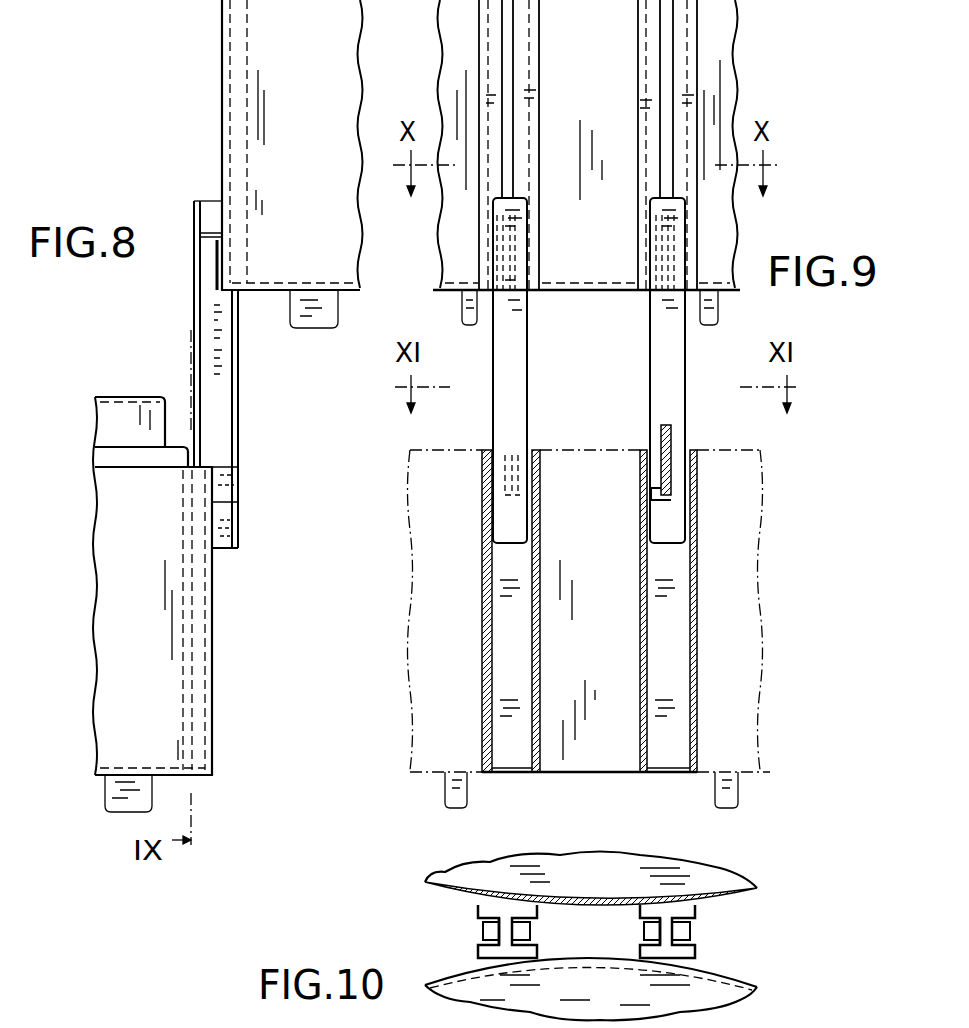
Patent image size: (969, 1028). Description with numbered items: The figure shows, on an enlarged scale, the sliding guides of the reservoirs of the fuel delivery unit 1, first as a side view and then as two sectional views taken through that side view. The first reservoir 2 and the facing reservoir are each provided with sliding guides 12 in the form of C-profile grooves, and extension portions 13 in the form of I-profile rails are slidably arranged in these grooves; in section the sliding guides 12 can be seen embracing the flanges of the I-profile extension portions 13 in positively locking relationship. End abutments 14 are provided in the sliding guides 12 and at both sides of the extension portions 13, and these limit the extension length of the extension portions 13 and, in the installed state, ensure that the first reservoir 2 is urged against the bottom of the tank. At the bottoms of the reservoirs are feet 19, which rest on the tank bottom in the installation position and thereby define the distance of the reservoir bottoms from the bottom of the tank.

In FIG. 8, the fuel delivery unit 1 is at (340, 33).
In FIG. 9, the fuel delivery unit 1 is at (720, 40).
In FIG. 10, the fuel delivery unit 1 is at (733, 880).
In FIG. 8, the first reservoir 2 is at (110, 578).
In FIG. 9, the first reservoir 2 is at (745, 608).
In FIG. 10, the first reservoir 2 is at (725, 990).
In FIG. 8, the sliding guides 12 is at (217, 133).
In FIG. 9, the sliding guides 12 is at (631, 108).
In FIG. 10, the sliding guides 12 is at (537, 952).
In FIG. 8, the extension portions 13 is at (218, 403).
In FIG. 9, the extension portions 13 is at (650, 363).
In FIG. 10, the extension portions 13 is at (510, 945).
In FIG. 8, the end abutments 14 is at (217, 262).
In FIG. 9, the end abutments 14 is at (490, 218).
In FIG. 10, the end abutments 14 is at (478, 928).
In FIG. 8, the feet 19 is at (317, 310).
In FIG. 9, the feet 19 is at (713, 325).